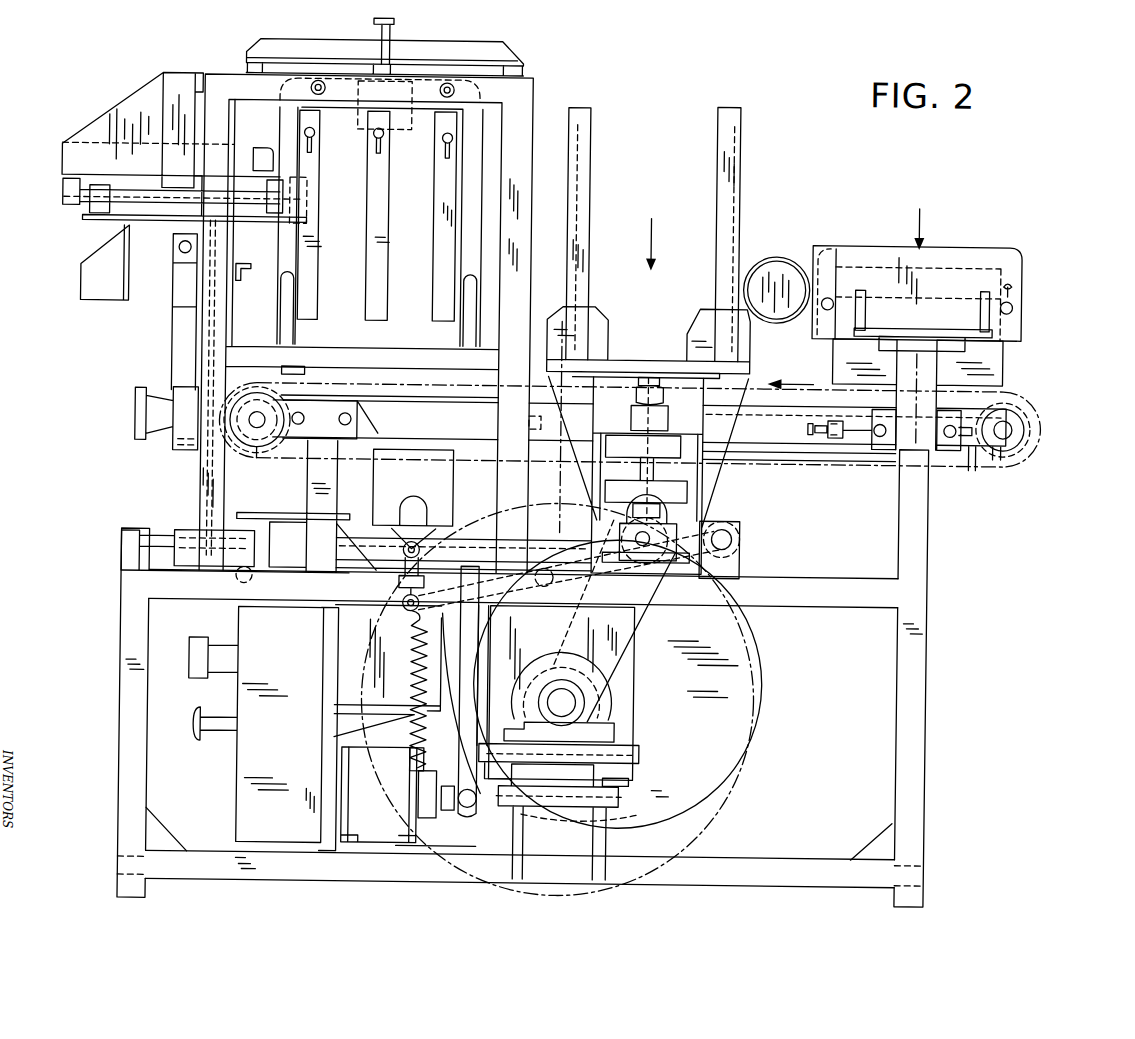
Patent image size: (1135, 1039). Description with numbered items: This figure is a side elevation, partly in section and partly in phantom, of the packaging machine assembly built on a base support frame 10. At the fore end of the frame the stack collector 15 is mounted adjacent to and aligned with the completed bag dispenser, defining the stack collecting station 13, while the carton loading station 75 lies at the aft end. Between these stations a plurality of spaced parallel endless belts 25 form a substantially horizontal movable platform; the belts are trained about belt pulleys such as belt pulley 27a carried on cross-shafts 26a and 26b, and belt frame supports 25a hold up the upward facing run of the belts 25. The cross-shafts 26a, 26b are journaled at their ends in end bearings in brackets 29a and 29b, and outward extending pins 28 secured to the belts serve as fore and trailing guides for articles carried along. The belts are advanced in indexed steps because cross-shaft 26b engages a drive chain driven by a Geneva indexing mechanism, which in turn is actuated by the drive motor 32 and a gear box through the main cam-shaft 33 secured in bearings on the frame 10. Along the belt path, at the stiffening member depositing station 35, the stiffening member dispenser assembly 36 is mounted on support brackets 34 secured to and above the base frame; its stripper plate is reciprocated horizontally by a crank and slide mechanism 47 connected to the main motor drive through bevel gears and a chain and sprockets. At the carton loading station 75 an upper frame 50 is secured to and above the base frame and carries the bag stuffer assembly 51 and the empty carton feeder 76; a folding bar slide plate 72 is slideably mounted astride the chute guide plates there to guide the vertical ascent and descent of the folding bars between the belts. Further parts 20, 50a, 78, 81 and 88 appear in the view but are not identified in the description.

The base support frame 10 is at (125, 692).
The stack collecting station 13 is at (982, 228).
The stack collector 15 is at (1000, 258).
The roller 20 is at (782, 268).
The endless belts 25 is at (1040, 430).
The belt frame supports 25a is at (398, 404).
The cross-shaft 26a is at (1013, 450).
The cross-shaft 26b is at (256, 428).
The belt pulley 27a is at (996, 455).
The pins 28 is at (297, 392).
The bracket 29a is at (985, 455).
The bracket 29b is at (307, 428).
The drive motor 32 is at (245, 803).
The main cam-shaft 33 is at (570, 698).
The support brackets 34 is at (705, 500).
The stiffening member depositing station 35 is at (688, 122).
The stiffening member dispenser assembly 36 is at (657, 342).
The crank and slide mechanism 47 is at (662, 470).
The frame 50 is at (530, 115).
The top plate 50a is at (500, 50).
The bag stuffer assembly 51 is at (420, 243).
The folding bar slide plate 72 is at (406, 500).
The carton loading station 75 is at (417, 343).
The empty carton feeder 76 is at (92, 128).
The belt 78 is at (479, 690).
The bracket 81 is at (80, 296).
The cam disc 88 is at (762, 720).